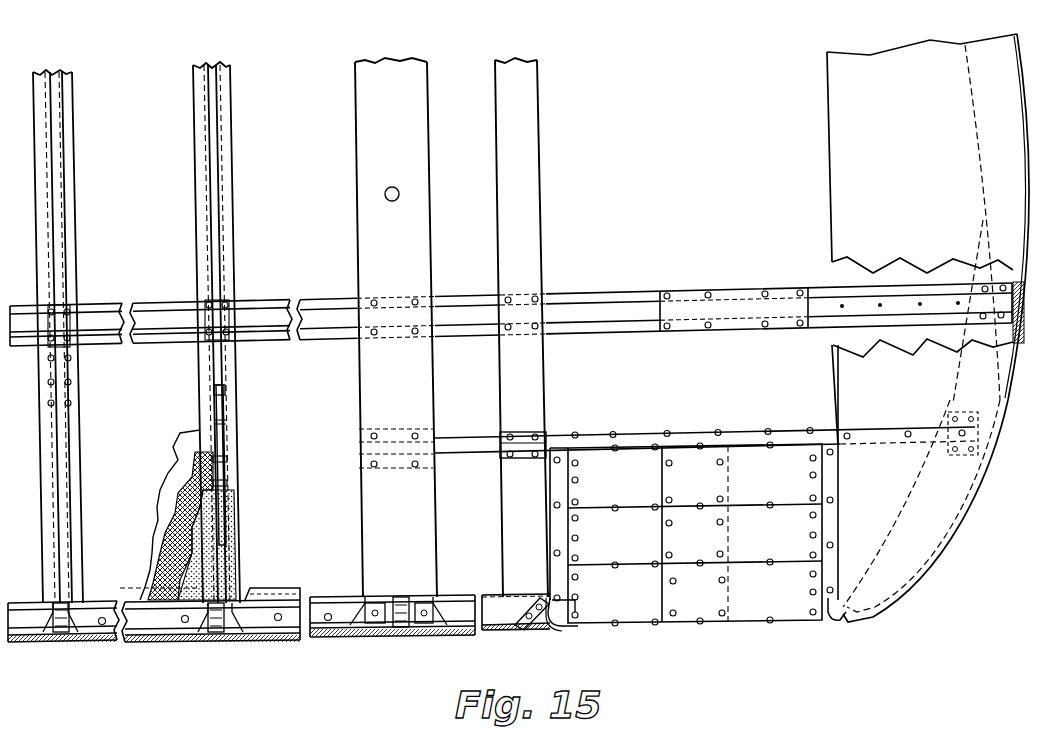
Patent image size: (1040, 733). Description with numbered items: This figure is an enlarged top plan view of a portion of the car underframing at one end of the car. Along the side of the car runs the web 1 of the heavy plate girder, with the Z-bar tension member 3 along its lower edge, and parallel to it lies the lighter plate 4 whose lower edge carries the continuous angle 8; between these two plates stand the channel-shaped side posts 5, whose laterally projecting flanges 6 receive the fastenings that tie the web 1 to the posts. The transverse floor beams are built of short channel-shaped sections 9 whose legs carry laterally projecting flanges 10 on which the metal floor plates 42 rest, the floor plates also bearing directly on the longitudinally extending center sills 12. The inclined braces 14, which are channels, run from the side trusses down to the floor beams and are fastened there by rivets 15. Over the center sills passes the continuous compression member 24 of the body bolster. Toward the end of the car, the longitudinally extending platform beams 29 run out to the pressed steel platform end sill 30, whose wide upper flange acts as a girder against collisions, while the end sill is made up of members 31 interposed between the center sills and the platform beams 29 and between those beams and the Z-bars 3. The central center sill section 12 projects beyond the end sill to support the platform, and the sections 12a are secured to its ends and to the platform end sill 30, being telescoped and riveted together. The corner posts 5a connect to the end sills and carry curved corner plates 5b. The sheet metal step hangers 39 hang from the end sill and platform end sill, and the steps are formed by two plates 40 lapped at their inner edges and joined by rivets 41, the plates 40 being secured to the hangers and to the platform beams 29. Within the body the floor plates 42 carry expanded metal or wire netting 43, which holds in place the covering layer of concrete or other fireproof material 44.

The web of the plate girder 1 is at (166, 645).
The tension member 3 is at (331, 600).
The plate 4 is at (150, 590).
The side posts 5 is at (404, 600).
The corner posts 5a is at (529, 627).
The curved corner plates 5b is at (546, 628).
The laterally projecting flanges 6 is at (246, 630).
The continuous angle 8 is at (273, 600).
The channel-shaped sections 9 is at (210, 332).
The laterally projecting flange 10 is at (206, 373).
The center sills 12 is at (106, 320).
The center sill sections 12a is at (822, 302).
The inclined braces 14 is at (223, 507).
The rivets 15 is at (228, 463).
The compression member 24 is at (369, 388).
The platform beams 29 is at (641, 437).
The platform end sill 30 is at (928, 328).
The end sill members 31 is at (513, 377).
The step hangers 39 is at (831, 624).
The step plates 40 is at (694, 485).
The rivets 41 is at (720, 611).
The floor plates 42 is at (153, 486).
The expanded metal or wire netting 43 is at (162, 533).
The fireproof material 44 is at (233, 557).